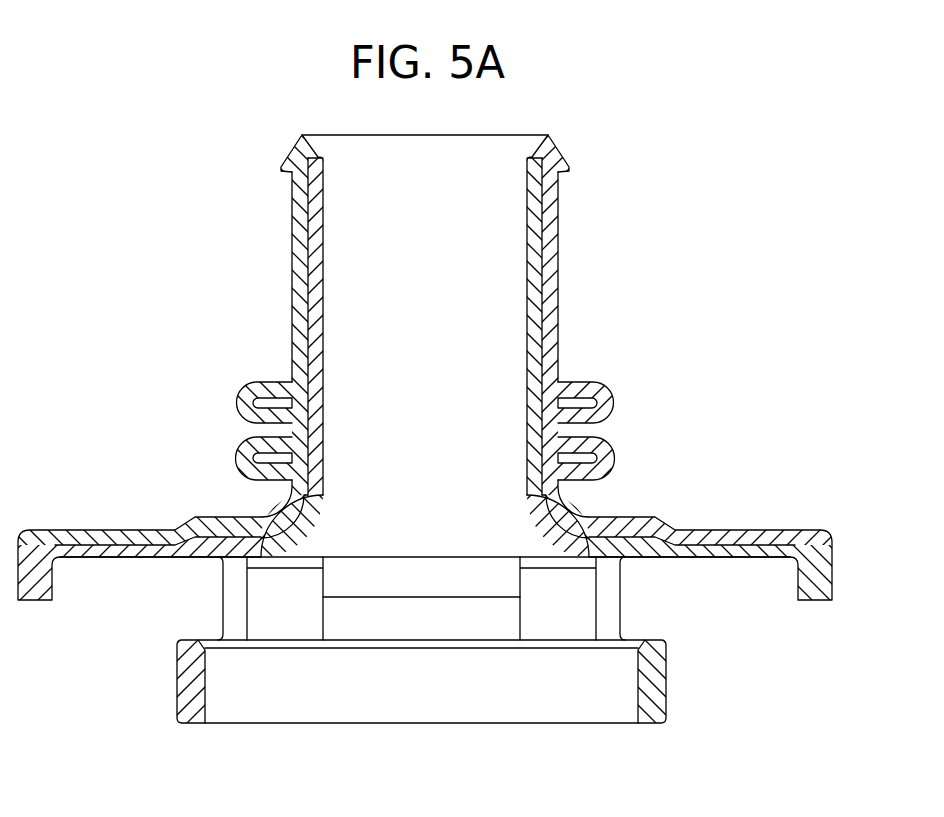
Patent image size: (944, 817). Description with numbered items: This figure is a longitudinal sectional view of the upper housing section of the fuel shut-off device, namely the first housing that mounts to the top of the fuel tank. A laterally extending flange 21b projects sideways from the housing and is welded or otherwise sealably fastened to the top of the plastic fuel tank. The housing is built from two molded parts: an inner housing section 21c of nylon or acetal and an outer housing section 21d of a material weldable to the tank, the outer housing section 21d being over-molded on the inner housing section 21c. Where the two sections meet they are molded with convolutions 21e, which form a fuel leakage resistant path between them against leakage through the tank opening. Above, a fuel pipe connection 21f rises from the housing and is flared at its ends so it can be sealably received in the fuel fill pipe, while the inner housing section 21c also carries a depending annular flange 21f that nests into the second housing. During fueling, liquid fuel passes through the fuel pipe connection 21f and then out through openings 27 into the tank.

The laterally extending flange 21b is at (834, 535).
The inner housing section 21c is at (320, 489).
The outer housing section 21d is at (299, 292).
The convolutions 21e is at (607, 455).
The fuel pipe connection 21f is at (558, 212).
The openings 27 is at (356, 586).